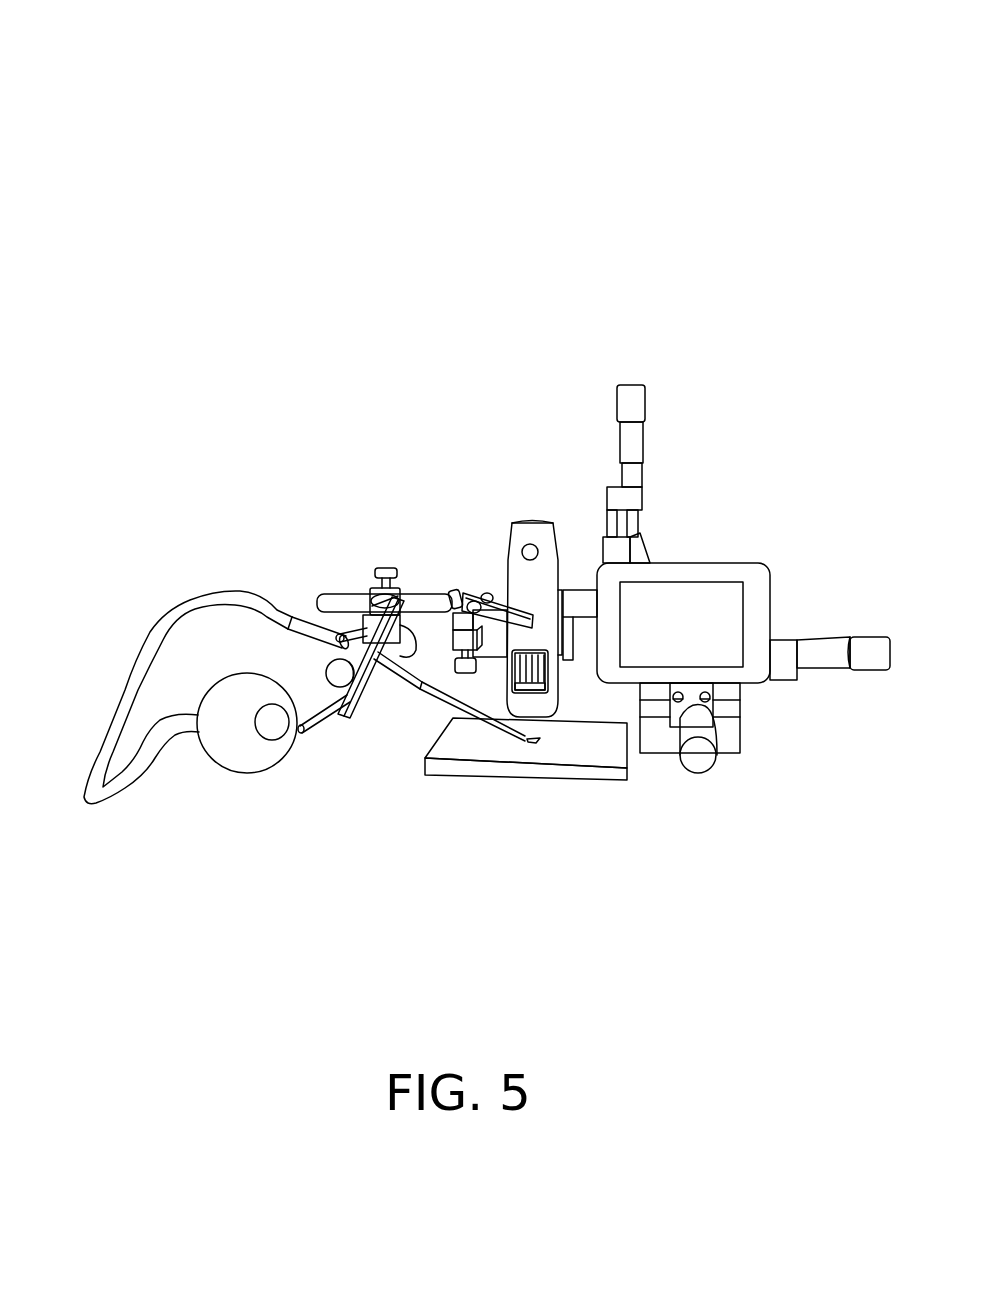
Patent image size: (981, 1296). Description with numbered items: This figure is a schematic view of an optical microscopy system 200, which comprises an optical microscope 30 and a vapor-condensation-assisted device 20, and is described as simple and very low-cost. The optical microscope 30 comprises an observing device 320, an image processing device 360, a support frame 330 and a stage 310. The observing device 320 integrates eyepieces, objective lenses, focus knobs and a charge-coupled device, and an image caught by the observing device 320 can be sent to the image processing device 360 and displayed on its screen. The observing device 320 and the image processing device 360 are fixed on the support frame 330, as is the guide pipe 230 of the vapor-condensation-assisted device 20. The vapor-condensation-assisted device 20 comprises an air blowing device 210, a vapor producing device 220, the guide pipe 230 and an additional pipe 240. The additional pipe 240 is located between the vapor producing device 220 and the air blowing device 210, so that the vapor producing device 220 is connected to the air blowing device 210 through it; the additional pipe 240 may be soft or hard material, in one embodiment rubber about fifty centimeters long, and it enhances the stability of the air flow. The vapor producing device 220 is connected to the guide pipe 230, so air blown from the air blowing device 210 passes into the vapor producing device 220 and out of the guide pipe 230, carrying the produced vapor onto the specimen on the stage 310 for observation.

The optical microscopy system 200 is at (368, 143).
The vapor-condensation-assisted device 20 is at (182, 590).
The air blowing device 210 is at (242, 765).
The vapor producing device 220 is at (305, 608).
The additional pipe 240 is at (147, 651).
The optical microscope 30 is at (590, 384).
The stage 310 is at (507, 722).
The observing device 320 is at (513, 567).
The support frame 330 is at (627, 495).
The image processing device 360 is at (607, 582).
The guide pipe 230 is at (440, 700).